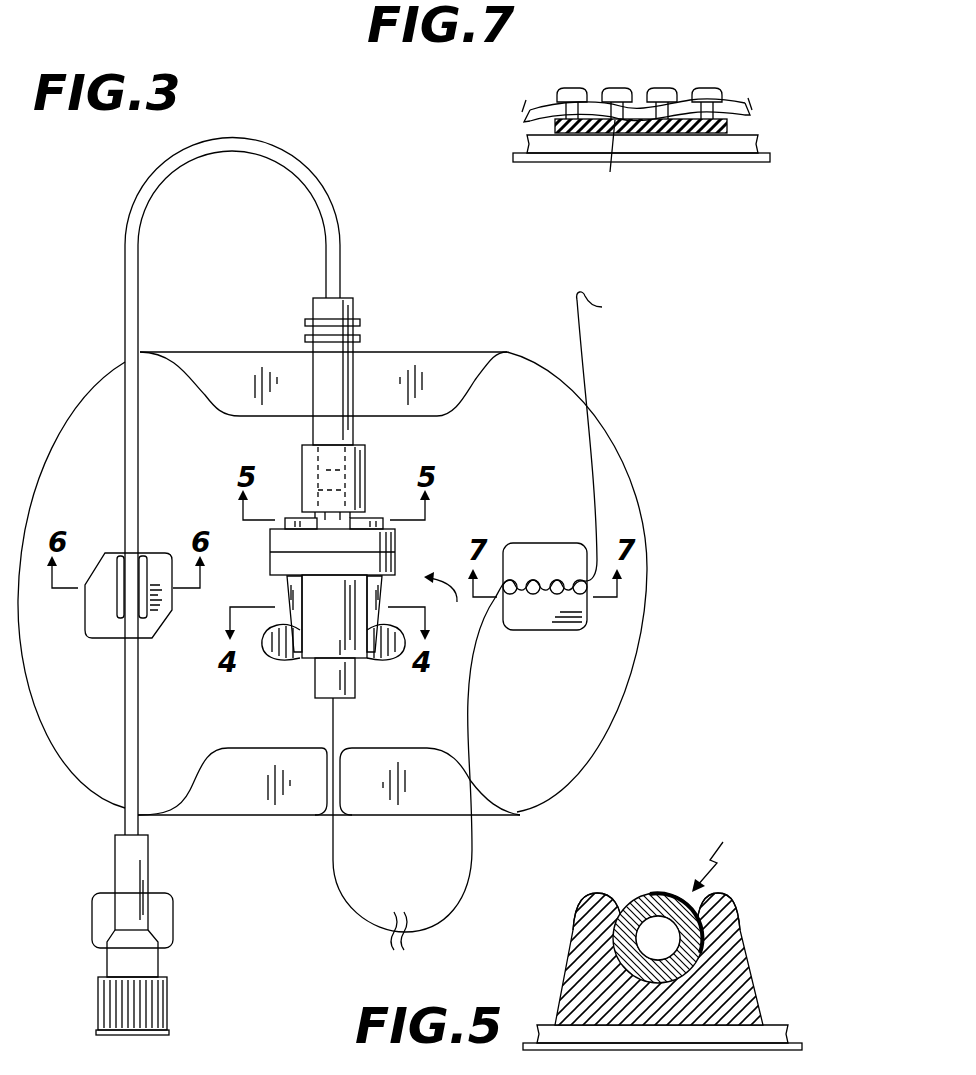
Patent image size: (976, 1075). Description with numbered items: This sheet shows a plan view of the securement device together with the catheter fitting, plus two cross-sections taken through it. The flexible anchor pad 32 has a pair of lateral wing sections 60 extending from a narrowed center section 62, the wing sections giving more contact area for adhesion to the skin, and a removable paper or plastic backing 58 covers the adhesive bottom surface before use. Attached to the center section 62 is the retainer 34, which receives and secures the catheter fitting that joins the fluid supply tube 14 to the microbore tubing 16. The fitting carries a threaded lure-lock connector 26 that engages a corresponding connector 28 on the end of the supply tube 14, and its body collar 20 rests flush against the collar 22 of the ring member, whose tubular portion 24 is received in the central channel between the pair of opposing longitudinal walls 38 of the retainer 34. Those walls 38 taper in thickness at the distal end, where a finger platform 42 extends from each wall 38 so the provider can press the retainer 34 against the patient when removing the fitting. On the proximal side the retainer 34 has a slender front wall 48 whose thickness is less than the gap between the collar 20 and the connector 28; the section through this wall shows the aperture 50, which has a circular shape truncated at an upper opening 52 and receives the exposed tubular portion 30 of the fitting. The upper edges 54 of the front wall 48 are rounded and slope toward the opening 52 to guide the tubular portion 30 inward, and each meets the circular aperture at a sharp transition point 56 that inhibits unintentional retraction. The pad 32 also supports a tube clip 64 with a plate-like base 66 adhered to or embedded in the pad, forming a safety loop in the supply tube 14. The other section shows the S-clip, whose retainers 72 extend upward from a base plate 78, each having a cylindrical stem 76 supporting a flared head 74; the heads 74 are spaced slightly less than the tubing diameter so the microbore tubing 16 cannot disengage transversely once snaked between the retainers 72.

In FIG. 3, the tube 14 is at (335, 200).
In FIG. 3, the microbore tubing 16 is at (345, 897).
In FIG. 7, the microbore tubing 16 is at (748, 105).
In FIG. 3, the collar 20 is at (397, 541).
In FIG. 3, the collar 22 is at (397, 563).
In FIG. 3, the tubular portion 24 is at (310, 647).
In FIG. 3, the threaded lure-lock connector 26 is at (330, 475).
In FIG. 3, the connector 28 is at (363, 462).
In FIG. 3, the exposed portion 30 is at (338, 520).
In FIG. 5, the exposed portion 30 is at (667, 895).
In FIG. 3, the pad 32 is at (595, 728).
In FIG. 7, the pad 32 is at (748, 143).
In FIG. 5, the pad 32 is at (773, 1030).
In FIG. 3, the retainer 34 is at (449, 599).
In FIG. 3, the longitudinal walls 38 is at (288, 588).
In FIG. 3, the finger platform 42 is at (275, 653).
In FIG. 3, the front wall 48 is at (292, 532).
In FIG. 5, the front wall 48 is at (747, 979).
In FIG. 5, the aperture 50 is at (707, 946).
In FIG. 5, the upper opening 52 is at (719, 855).
In FIG. 5, the upper edges 54 is at (613, 900).
In FIG. 5, the transition point 56 is at (620, 907).
In FIG. 3, the backing 58 is at (385, 352).
In FIG. 7, the backing 58 is at (742, 160).
In FIG. 5, the backing 58 is at (787, 1043).
In FIG. 3, the lateral wing sections 60 is at (85, 405).
In FIG. 3, the center section 62 is at (247, 732).
In FIG. 3, the tube clip 64 is at (95, 632).
In FIG. 3, the base 66 is at (157, 558).
In FIG. 3, the retainers 72 is at (518, 581).
In FIG. 7, the retainers 72 is at (603, 103).
In FIG. 7, the flared head 74 is at (717, 98).
In FIG. 7, the cylindrical stem 76 is at (557, 107).
In FIG. 3, the base plate 78 is at (543, 618).
In FIG. 7, the base plate 78 is at (727, 126).